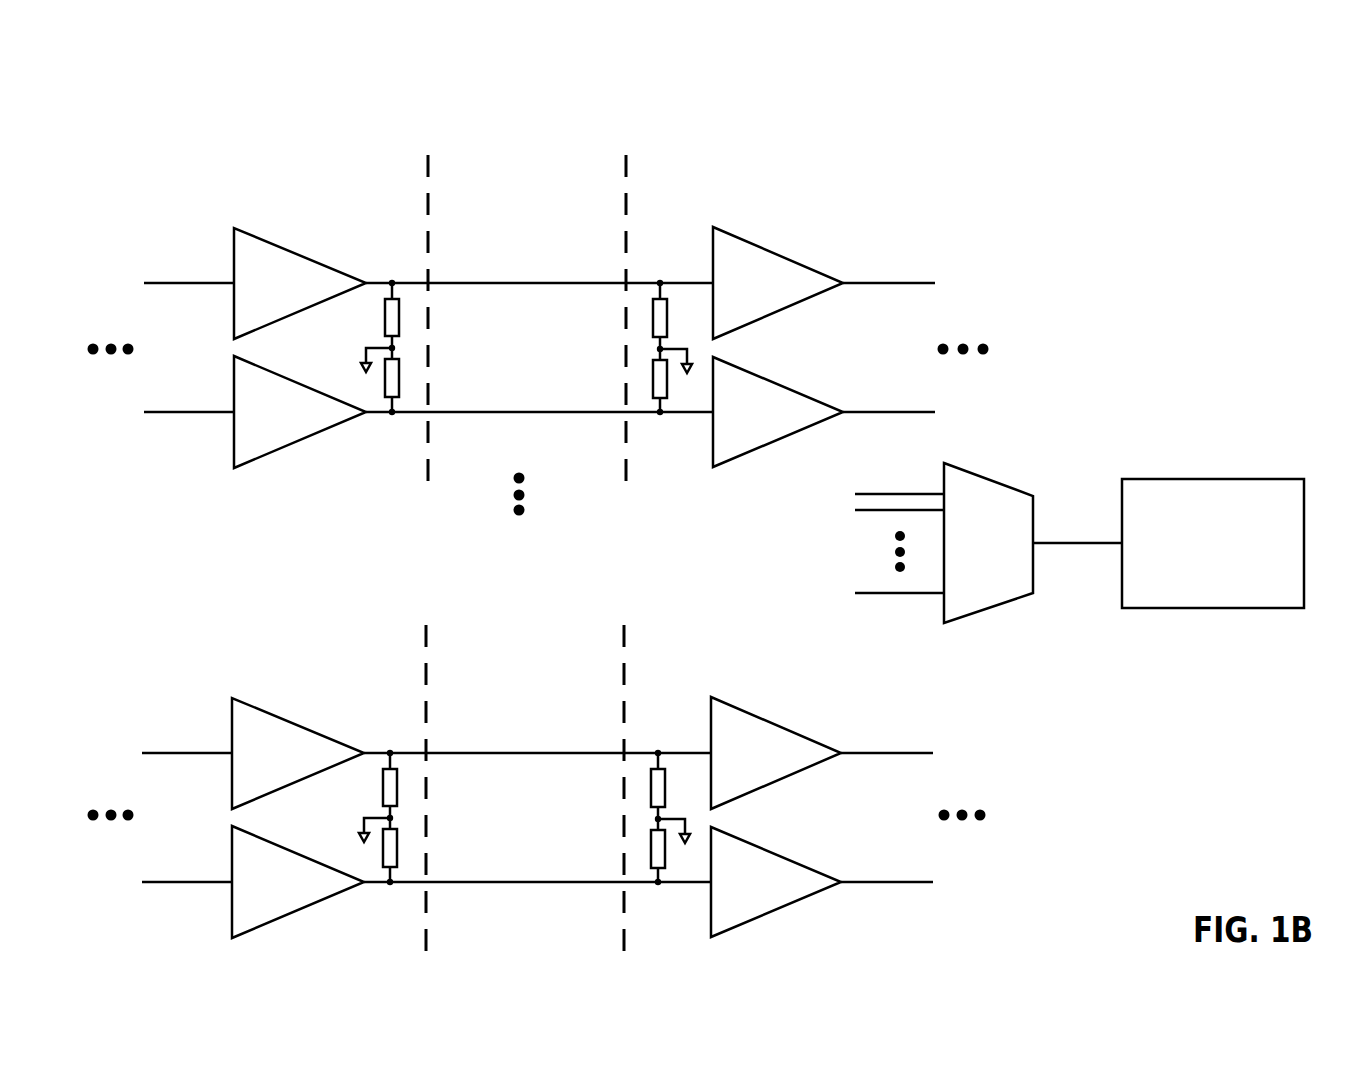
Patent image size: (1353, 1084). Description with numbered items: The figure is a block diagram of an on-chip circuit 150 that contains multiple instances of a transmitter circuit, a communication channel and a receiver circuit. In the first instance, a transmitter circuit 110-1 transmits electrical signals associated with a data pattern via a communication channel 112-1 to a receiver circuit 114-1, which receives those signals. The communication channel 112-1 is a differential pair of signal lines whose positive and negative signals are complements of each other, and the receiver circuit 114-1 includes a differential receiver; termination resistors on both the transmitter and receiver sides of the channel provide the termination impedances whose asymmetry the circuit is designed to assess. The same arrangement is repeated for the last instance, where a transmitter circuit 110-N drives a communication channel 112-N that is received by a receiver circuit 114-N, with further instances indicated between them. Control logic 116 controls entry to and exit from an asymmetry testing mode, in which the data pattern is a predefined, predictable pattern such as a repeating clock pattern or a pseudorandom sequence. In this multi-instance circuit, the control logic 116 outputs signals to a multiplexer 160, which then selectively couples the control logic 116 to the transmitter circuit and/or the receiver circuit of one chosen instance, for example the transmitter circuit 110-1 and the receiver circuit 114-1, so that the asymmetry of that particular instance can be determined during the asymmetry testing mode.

The on-chip circuit 150 is at (236, 140).
The transmitter circuit 110-1 is at (287, 405).
The communication channel 112-1 is at (626, 140).
The receiver circuit 114-1 is at (765, 405).
The transmitter circuit 110-N is at (284, 783).
The communication channel 112-N is at (525, 741).
The receiver circuit 114-N is at (778, 782).
The multiplexer 160 is at (979, 513).
The control logic 116 is at (1228, 576).